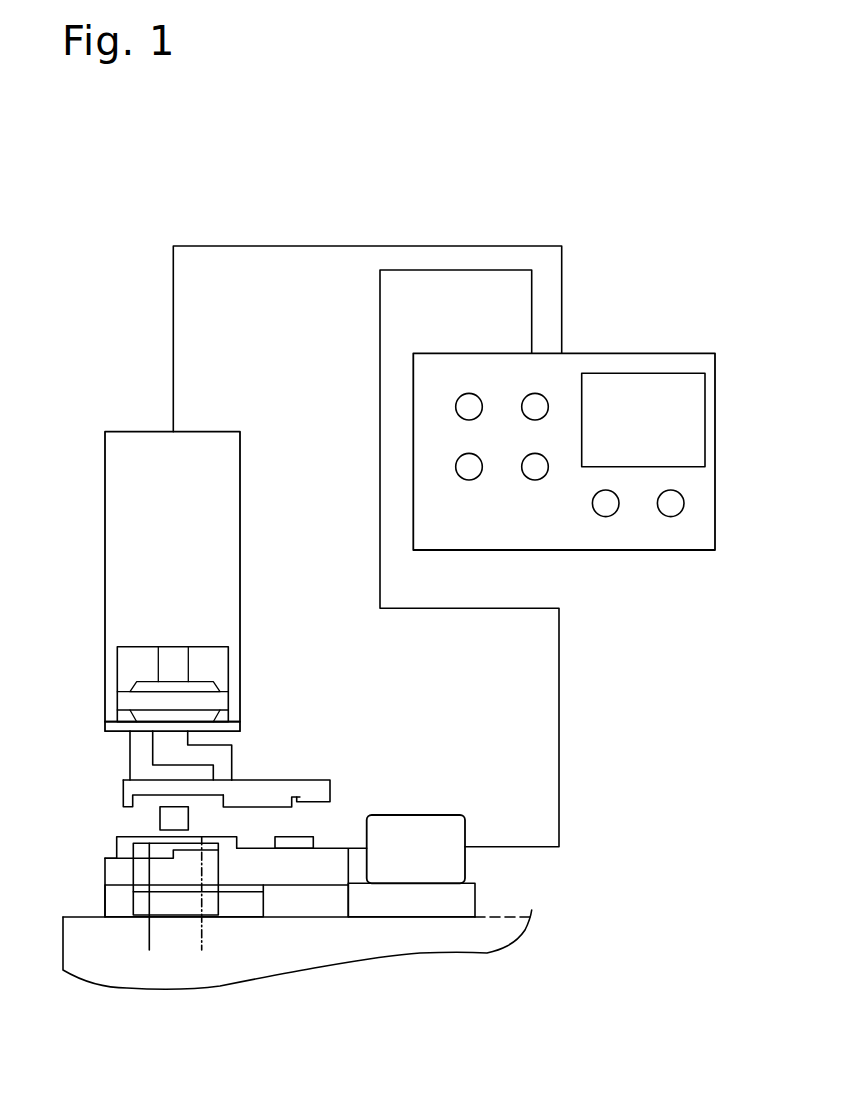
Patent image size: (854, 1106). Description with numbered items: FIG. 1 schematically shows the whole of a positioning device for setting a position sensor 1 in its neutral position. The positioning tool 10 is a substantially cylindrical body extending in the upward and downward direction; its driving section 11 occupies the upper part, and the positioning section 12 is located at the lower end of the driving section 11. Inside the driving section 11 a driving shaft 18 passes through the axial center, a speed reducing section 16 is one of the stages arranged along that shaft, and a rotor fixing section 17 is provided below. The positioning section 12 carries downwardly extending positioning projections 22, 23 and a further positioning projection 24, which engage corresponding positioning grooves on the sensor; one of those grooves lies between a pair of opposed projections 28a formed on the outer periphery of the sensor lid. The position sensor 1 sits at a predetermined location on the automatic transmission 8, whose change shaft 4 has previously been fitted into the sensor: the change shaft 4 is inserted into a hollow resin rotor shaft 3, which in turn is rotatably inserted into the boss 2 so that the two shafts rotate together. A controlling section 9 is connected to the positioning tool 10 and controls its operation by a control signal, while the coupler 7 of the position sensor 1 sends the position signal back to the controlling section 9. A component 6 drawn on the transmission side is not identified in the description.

The position sensor 1 is at (295, 842).
The boss 2 is at (127, 842).
The rotor shaft 3 is at (213, 897).
The change shaft 4 is at (217, 943).
The stage 6 is at (137, 903).
The coupler 7 is at (415, 810).
The automatic transmission 8 is at (427, 945).
The controlling section 9 is at (612, 353).
The positioning tool 10 is at (209, 603).
The driving section 11 is at (220, 490).
The positioning section 12 is at (211, 781).
The speed reducing section 16 is at (193, 692).
The rotor fixing section 17 is at (133, 755).
The driving shaft 18 is at (162, 662).
The positioning projection 22 is at (122, 803).
The positioning projection 23 is at (228, 800).
The positioning projection 24 is at (327, 780).
The opposed projections 28a is at (300, 835).